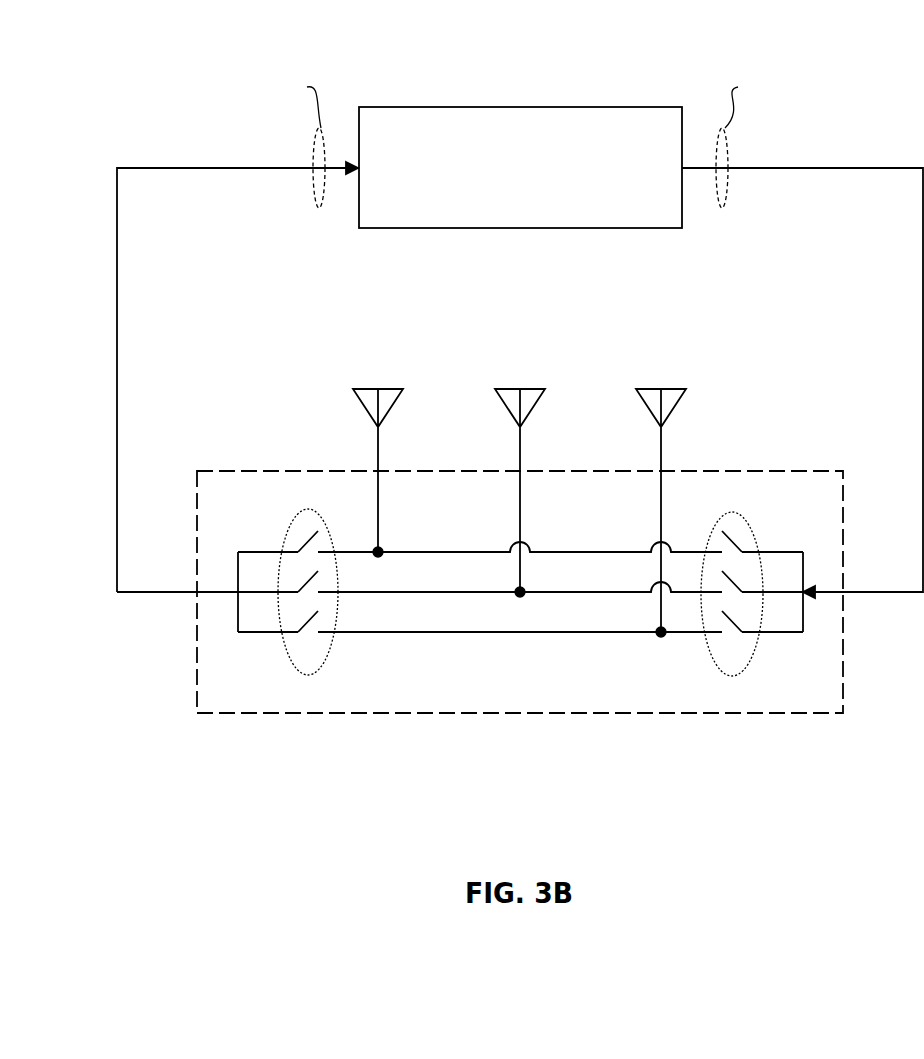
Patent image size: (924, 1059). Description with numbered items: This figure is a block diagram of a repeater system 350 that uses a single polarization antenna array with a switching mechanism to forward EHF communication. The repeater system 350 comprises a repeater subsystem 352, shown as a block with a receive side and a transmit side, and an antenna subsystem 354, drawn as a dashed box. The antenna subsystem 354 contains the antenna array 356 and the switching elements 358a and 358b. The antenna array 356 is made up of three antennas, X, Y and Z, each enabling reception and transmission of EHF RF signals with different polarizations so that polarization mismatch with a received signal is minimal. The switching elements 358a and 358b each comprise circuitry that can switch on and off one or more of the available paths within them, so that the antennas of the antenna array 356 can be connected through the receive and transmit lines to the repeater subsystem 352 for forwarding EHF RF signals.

The repeater system 350 is at (146, 67).
The repeater subsystem 352 is at (531, 107).
The antenna subsystem 354 is at (772, 471).
The antenna array 356 is at (682, 350).
The switching element 358a is at (324, 666).
The switching element 358b is at (716, 666).